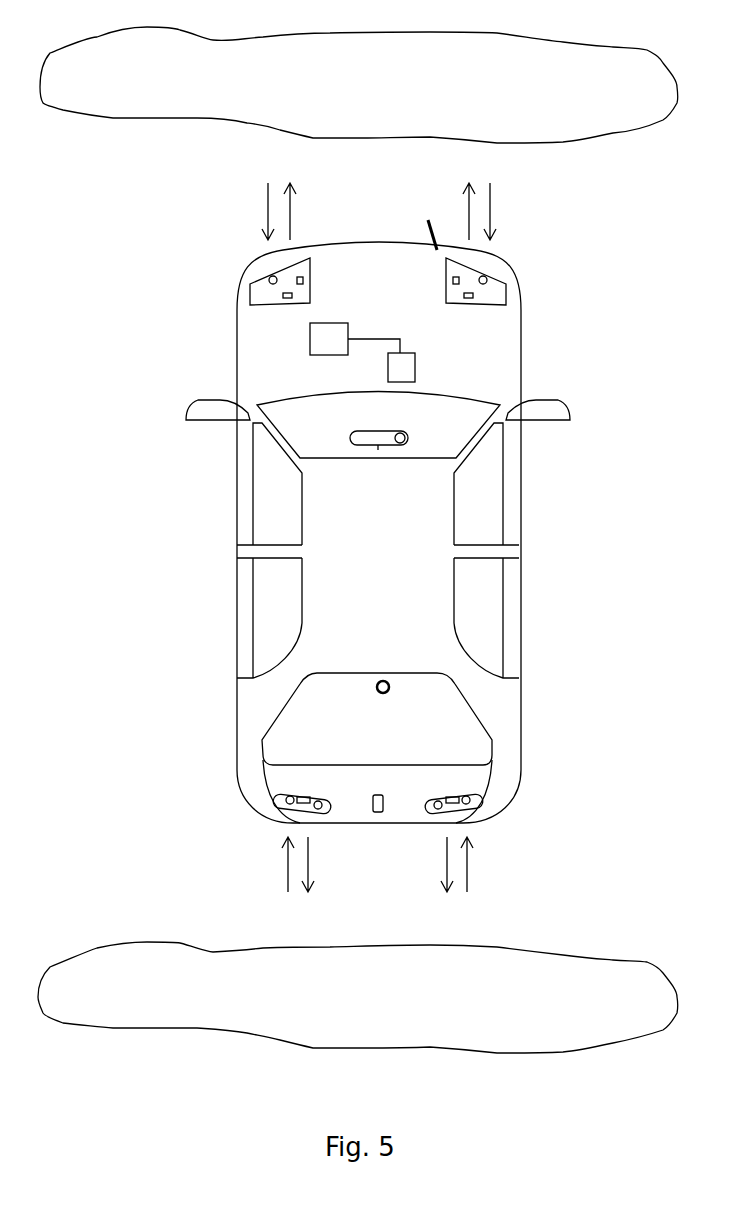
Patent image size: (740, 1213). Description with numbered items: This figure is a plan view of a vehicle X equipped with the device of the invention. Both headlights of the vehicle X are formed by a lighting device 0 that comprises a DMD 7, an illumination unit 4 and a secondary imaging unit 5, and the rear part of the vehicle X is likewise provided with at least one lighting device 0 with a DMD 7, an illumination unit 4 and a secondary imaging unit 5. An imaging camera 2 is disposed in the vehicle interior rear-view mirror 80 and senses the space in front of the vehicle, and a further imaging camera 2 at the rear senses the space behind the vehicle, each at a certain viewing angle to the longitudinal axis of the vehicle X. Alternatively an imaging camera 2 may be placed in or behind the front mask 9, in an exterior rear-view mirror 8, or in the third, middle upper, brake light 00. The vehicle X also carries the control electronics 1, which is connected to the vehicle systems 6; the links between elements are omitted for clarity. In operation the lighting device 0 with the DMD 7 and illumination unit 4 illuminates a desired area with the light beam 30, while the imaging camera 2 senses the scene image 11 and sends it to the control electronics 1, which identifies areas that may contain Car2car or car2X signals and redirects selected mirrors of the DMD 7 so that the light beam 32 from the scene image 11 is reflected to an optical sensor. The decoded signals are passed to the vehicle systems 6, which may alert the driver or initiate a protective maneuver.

The scene image 11 is at (358, 540).
The vehicle X is at (413, 585).
The illumination unit 4 is at (446, 268).
The secondary imaging unit 5 is at (484, 803).
The lighting device 0 is at (471, 800).
The DMD 7 is at (463, 810).
The front mask 9 is at (424, 220).
The light beam 30 is at (379, 534).
The light beam 32 is at (380, 534).
The control electronics 1 is at (355, 339).
The vehicle systems 6 is at (401, 368).
The exterior rear-view mirror 8 is at (560, 412).
The interior rear-view mirror 80 is at (350, 440).
The imaging camera 2 is at (373, 800).
The third, middle upper, brake light 00 is at (381, 681).